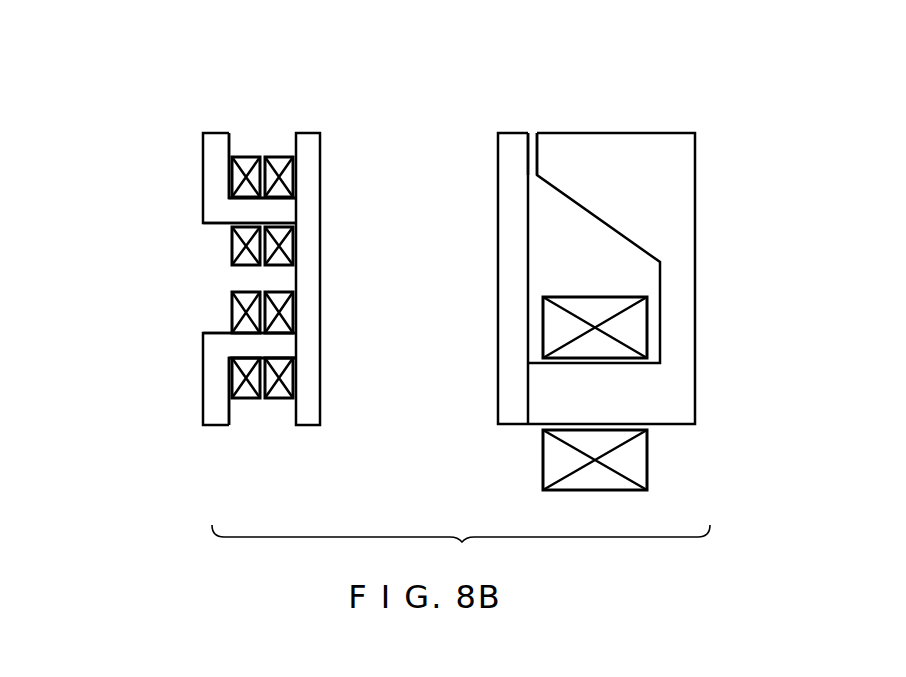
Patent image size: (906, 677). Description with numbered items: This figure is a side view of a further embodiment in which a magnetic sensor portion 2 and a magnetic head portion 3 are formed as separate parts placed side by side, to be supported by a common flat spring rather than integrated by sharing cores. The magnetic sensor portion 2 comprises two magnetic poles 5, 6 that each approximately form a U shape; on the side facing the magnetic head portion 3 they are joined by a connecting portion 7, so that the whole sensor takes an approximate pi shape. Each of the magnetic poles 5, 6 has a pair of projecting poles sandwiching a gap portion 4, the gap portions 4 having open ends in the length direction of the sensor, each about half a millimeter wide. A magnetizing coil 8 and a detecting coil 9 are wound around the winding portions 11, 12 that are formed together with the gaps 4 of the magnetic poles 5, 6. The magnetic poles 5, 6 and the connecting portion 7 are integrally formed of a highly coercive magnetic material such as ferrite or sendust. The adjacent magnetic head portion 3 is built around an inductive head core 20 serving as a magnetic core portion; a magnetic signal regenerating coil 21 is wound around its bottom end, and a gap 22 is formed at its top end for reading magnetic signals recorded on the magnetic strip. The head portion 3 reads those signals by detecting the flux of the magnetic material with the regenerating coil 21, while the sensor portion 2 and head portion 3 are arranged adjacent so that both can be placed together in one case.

The magnetic sensor portion 2 is at (227, 268).
The magnetic head portion 3 is at (653, 259).
The gap portion 4 is at (269, 139).
The magnetic pole 5 is at (192, 179).
The magnetic pole 6 is at (186, 391).
The connecting portion 7 is at (310, 260).
The magnetizing coil 8 is at (249, 158).
The detecting coil 9 is at (278, 158).
The winding portion 11 is at (250, 208).
The winding portion 12 is at (242, 345).
The inductive head core 20 is at (672, 240).
The magnetic signal regenerating coil 21 is at (633, 457).
The gap 22 is at (535, 127).